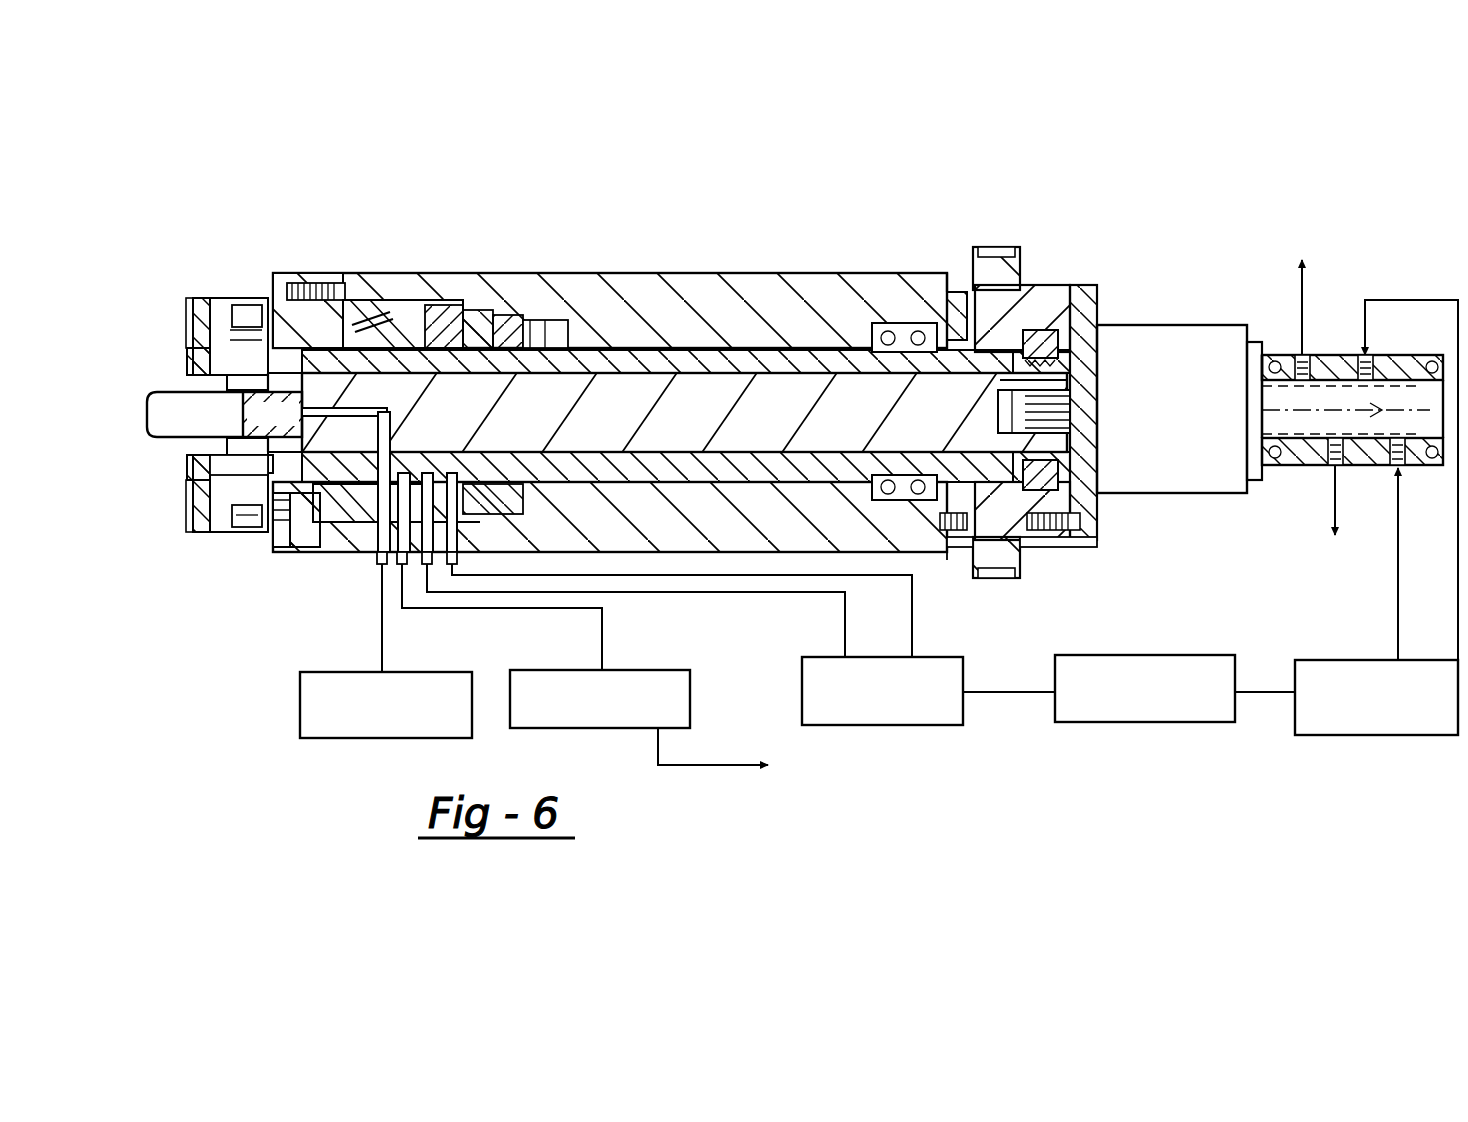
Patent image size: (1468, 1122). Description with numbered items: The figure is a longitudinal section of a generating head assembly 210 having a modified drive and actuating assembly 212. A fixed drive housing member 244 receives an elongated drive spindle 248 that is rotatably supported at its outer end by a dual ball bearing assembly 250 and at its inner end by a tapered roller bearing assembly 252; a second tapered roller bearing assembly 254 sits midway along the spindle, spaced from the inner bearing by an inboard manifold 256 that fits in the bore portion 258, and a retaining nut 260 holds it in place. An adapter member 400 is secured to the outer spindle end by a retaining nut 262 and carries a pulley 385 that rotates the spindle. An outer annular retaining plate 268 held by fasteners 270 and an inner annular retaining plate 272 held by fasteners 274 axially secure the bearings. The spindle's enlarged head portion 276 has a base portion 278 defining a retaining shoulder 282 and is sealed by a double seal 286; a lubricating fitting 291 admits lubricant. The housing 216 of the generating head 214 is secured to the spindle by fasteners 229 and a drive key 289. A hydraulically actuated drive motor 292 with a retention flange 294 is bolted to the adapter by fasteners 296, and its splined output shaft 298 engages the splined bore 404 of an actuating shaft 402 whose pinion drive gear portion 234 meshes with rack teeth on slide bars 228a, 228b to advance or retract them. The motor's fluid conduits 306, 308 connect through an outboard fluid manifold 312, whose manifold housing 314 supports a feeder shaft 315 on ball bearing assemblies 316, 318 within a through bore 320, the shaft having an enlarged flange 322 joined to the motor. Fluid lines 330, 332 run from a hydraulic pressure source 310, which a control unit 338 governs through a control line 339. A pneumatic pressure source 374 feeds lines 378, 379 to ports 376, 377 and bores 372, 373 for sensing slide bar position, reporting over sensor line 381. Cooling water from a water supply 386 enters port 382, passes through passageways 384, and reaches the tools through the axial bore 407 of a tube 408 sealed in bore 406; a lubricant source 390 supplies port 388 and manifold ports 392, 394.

The generating head assembly 210 is at (770, 205).
The drive and actuating assembly 212 is at (832, 262).
The generating head 214 is at (225, 585).
The housing 216 is at (229, 305).
The slide bar 228a is at (186, 352).
The slide bar 228b is at (192, 468).
The fasteners 229 is at (192, 515).
The pinion drive gear portion 234 is at (192, 360).
The drive housing member 244 is at (665, 275).
The drive spindle 248 is at (792, 352).
The dual ball bearing assembly 250 is at (892, 325).
The tapered roller bearing assembly 252 is at (365, 330).
The second tapered roller bearing assembly 254 is at (525, 325).
The inboard manifold 256 is at (447, 330).
The bore portion 258 is at (488, 330).
The retaining nut 260 is at (555, 333).
The retaining nut 262 is at (1045, 330).
The outer annular retaining plate 268 is at (947, 292).
The fasteners 270 is at (985, 560).
The inner annular retaining plate 272 is at (300, 285).
The fasteners 274 is at (340, 292).
The enlarged head portion 276 is at (212, 540).
The base portion 278 is at (282, 535).
The retaining shoulder 282 is at (390, 415).
The double seal 286 is at (272, 300).
The drive key 289 is at (234, 345).
The lubricating fitting 291 is at (290, 548).
The hydraulically actuated drive motor 292 is at (1160, 412).
The retention flange 294 is at (1080, 288).
The fasteners 296 is at (1097, 537).
The splined output shaft 298 is at (1000, 405).
The fluid conduit 306 is at (1248, 386).
The fluid conduit 308 is at (1248, 434).
The hydraulic pressure source 310 is at (1298, 660).
The outboard fluid manifold 312 is at (1330, 343).
The manifold housing 314 is at (1365, 350).
The feeder shaft 315 is at (1385, 430).
The ball bearing assembly 316 is at (1452, 345).
The ball bearing assembly 318 is at (1262, 357).
The through bore 320 is at (1440, 462).
The enlarged flange 322 is at (1252, 485).
The fluid line 330 is at (1457, 568).
The fluid line 332 is at (1398, 645).
The control unit 338 is at (1165, 655).
The control line 339 is at (1265, 692).
The bore 372 is at (495, 482).
The bore 373 is at (425, 480).
The pneumatic pressure source 374 is at (975, 690).
The port 376 is at (455, 560).
The port 377 is at (425, 595).
The line 378 is at (857, 578).
The line 379 is at (763, 595).
The sensor line 381 is at (1038, 690).
The port 382 is at (378, 555).
The passageways 384 is at (390, 370).
The pulley 385 is at (990, 290).
The water supply 386 is at (300, 708).
The port 388 is at (392, 600).
The lubricant source 390 is at (690, 700).
The port 392 is at (1302, 350).
The port 394 is at (1330, 466).
The adapter member 400 is at (1036, 330).
The actuating shaft 402 is at (708, 368).
The splined bore 404 is at (995, 420).
The bore 406 is at (372, 332).
The axial bore 407 is at (272, 414).
The tube 408 is at (155, 425).